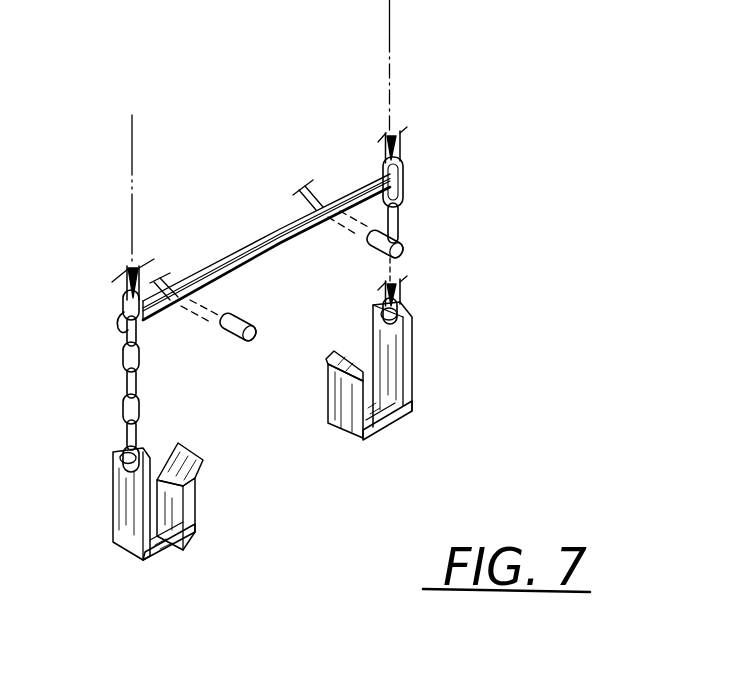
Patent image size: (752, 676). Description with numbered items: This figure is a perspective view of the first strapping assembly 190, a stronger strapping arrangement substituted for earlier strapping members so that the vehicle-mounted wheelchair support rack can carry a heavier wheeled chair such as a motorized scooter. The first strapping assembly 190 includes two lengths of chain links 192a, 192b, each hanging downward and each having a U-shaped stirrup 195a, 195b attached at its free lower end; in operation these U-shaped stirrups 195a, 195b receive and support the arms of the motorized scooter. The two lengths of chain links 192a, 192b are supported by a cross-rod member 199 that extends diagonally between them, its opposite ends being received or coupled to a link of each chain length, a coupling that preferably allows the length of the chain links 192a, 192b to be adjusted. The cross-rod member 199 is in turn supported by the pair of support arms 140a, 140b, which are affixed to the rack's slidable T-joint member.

The first strapping assembly 190 is at (440, 218).
The length of chain links 192a is at (120, 402).
The length of chain links 192b is at (407, 174).
The U-shaped stirrup 195a is at (175, 544).
The U-shaped stirrup 195b is at (413, 380).
The cross-rod member 199 is at (243, 250).
The support arm 140a is at (247, 340).
The support arm 140b is at (320, 192).